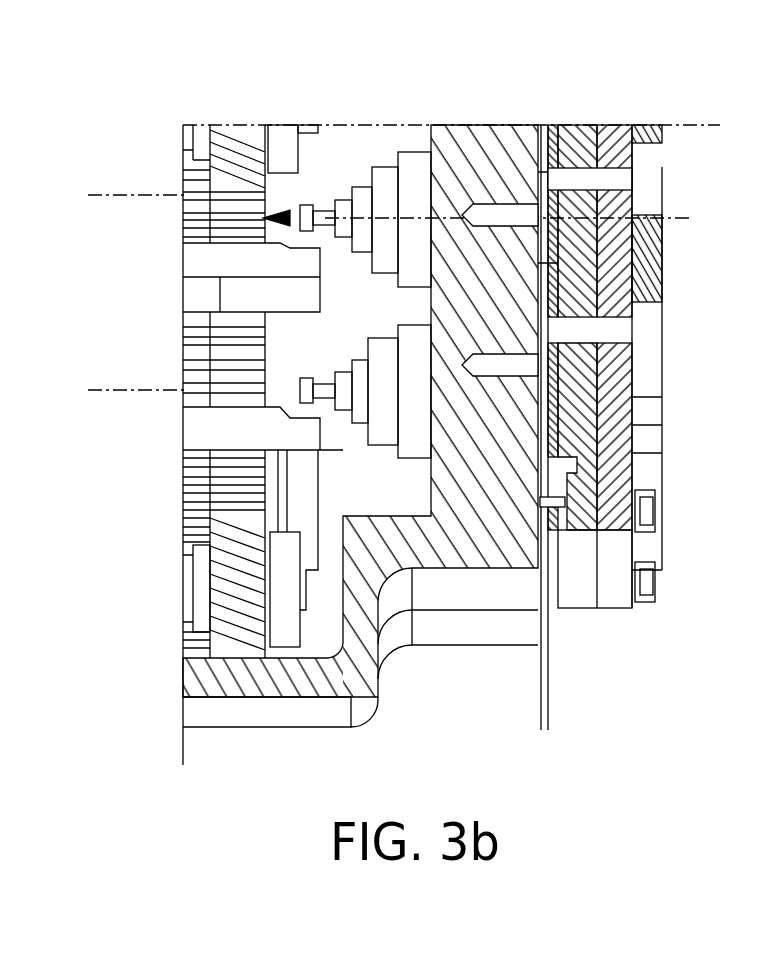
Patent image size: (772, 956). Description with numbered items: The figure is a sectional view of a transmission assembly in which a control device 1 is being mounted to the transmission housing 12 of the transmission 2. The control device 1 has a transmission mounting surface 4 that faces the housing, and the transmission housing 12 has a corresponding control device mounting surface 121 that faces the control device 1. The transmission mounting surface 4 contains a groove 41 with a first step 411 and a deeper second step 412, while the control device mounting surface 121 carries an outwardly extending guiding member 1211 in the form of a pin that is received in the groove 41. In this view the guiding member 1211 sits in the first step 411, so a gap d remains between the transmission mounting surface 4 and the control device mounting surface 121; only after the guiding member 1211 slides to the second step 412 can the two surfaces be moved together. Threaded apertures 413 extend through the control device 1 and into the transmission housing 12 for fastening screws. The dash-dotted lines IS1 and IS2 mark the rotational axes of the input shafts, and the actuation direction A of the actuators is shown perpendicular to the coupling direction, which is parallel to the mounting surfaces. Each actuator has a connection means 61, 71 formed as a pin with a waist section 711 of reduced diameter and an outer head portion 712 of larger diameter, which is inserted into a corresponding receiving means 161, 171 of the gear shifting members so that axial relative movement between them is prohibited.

The control device 1 is at (660, 288).
The transmission 2 is at (361, 470).
The transmission mounting surface 4 is at (550, 583).
The transmission housing 12 is at (254, 712).
The groove 41 is at (654, 475).
The connection means 61 is at (306, 388).
The connection means 71 is at (361, 164).
The control device mounting surface 121 is at (543, 596).
The receiving means 161 is at (300, 437).
The receiving means 171 is at (301, 262).
The first step 411 is at (566, 510).
The second step 412 is at (592, 470).
The apertures 413 is at (571, 180).
The waist section 711 is at (308, 205).
The outer head portion 712 is at (325, 214).
The outwardly extending guiding member 1211 is at (566, 535).
The actuation direction A is at (688, 218).
The rotational axis of input shaft IS1 is at (133, 396).
The rotational axis of input shaft IS2 is at (134, 192).
The gap d is at (592, 722).